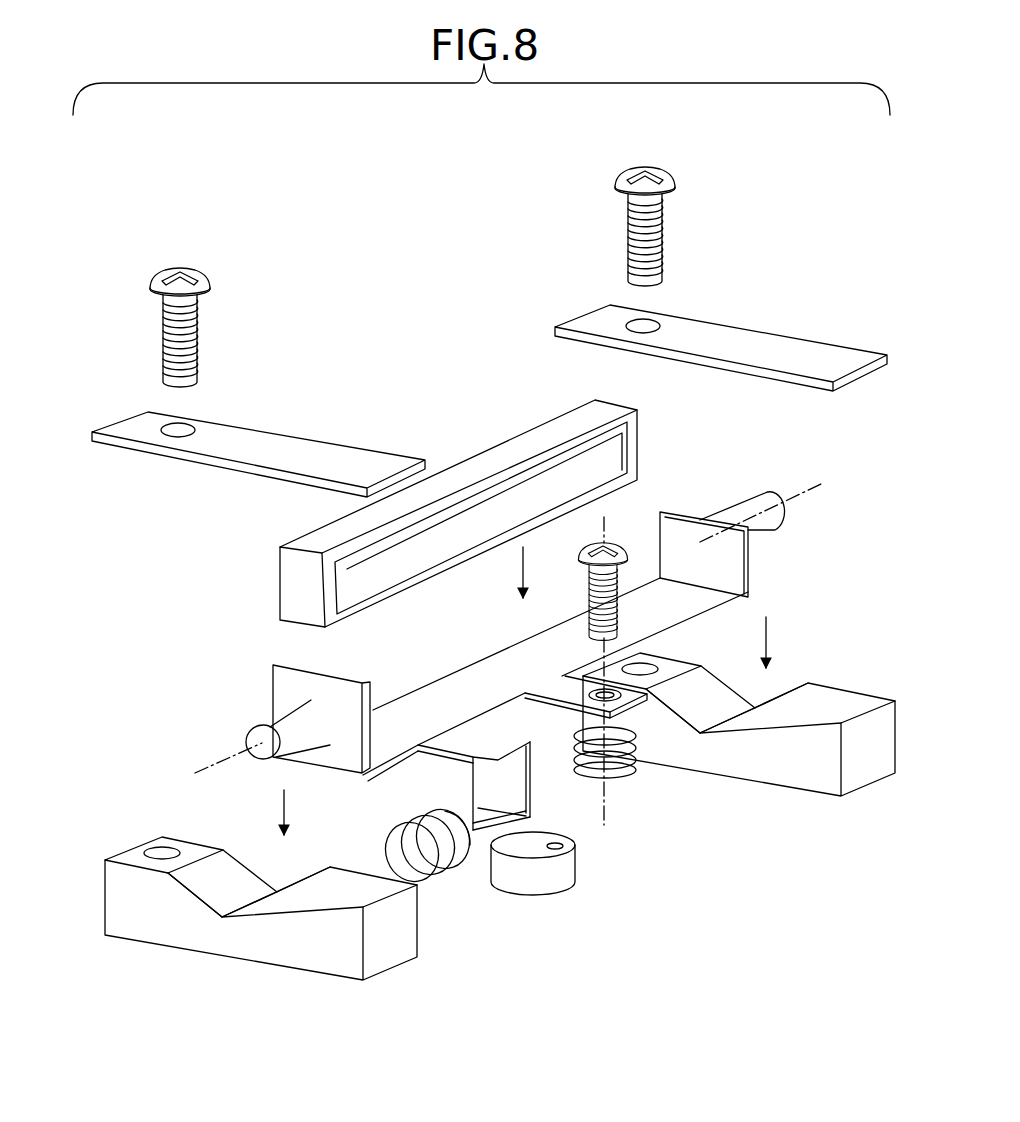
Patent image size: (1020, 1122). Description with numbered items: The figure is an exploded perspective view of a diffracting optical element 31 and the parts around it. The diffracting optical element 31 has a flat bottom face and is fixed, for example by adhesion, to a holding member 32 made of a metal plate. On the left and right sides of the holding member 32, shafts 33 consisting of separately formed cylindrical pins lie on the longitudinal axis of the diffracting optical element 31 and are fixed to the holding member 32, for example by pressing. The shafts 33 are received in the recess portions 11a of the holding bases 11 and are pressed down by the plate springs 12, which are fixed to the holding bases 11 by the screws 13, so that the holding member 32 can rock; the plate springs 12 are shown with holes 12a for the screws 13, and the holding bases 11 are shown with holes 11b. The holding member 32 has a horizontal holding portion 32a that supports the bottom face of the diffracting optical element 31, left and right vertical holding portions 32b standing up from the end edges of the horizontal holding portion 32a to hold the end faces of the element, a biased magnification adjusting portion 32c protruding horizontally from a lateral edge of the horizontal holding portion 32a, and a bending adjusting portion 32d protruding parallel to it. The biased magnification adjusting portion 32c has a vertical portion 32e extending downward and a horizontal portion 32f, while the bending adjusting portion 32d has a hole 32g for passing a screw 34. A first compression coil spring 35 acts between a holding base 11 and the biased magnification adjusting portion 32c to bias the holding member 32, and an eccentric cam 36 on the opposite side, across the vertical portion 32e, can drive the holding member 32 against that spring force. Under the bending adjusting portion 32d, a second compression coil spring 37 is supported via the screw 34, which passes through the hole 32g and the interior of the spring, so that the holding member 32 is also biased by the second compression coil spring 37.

The holding base 11 is at (500, 814).
The recess portion 11a is at (236, 877).
The screw hole 11b is at (160, 848).
The plate spring 12 is at (489, 367).
The screw hole 12a is at (173, 426).
The screw 13 is at (196, 272).
The diffracting optical element 31 is at (510, 500).
The holding member 32 is at (515, 684).
The horizontal holding portion 32a is at (433, 698).
The vertical holding portion 32b is at (280, 690).
The biased magnification adjusting portion 32c is at (445, 751).
The bending adjusting portion 32d is at (624, 742).
The vertical portion 32e is at (533, 798).
The horizontal portion 32f is at (482, 832).
The hole 32g is at (633, 697).
The shaft 33 is at (250, 735).
The screw 34 is at (613, 547).
The first compression coil spring 35 is at (388, 840).
The eccentric cam 36 is at (553, 882).
The second compression coil spring 37 is at (620, 778).